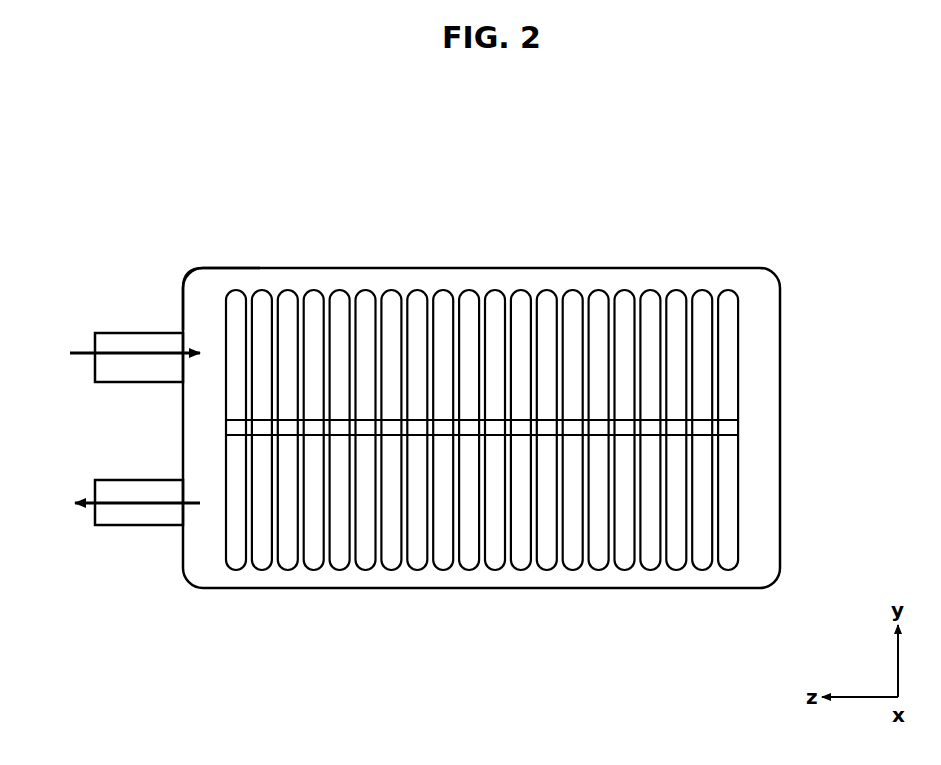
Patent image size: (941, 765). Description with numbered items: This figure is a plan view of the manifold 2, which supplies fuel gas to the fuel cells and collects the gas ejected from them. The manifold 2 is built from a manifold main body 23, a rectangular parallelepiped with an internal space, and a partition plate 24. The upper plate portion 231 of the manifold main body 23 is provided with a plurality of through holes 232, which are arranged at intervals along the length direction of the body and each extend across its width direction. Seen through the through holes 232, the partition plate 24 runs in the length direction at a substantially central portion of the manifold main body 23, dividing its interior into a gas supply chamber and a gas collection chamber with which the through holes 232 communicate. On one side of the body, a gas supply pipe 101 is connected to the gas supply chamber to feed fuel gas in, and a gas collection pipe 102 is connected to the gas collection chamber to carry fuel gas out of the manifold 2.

The manifold 2 is at (431, 381).
The manifold main body 23 is at (741, 265).
The upper plate portion 231 is at (214, 281).
The through holes 232 is at (296, 318).
The partition plate 24 is at (316, 438).
The gas supply pipe 101 is at (123, 333).
The gas collection pipe 102 is at (125, 527).